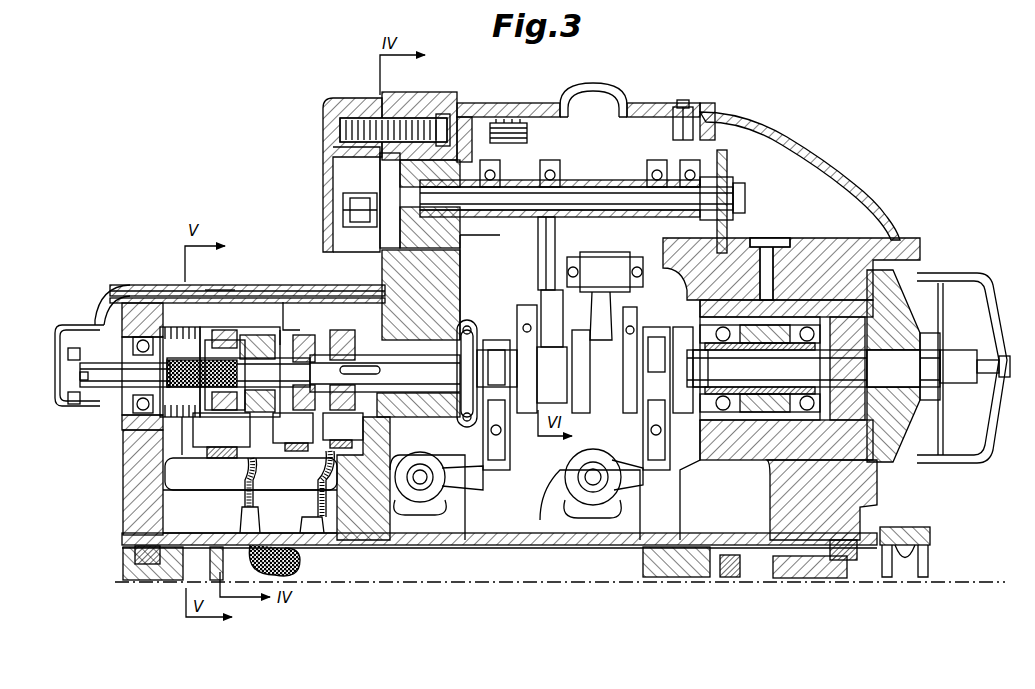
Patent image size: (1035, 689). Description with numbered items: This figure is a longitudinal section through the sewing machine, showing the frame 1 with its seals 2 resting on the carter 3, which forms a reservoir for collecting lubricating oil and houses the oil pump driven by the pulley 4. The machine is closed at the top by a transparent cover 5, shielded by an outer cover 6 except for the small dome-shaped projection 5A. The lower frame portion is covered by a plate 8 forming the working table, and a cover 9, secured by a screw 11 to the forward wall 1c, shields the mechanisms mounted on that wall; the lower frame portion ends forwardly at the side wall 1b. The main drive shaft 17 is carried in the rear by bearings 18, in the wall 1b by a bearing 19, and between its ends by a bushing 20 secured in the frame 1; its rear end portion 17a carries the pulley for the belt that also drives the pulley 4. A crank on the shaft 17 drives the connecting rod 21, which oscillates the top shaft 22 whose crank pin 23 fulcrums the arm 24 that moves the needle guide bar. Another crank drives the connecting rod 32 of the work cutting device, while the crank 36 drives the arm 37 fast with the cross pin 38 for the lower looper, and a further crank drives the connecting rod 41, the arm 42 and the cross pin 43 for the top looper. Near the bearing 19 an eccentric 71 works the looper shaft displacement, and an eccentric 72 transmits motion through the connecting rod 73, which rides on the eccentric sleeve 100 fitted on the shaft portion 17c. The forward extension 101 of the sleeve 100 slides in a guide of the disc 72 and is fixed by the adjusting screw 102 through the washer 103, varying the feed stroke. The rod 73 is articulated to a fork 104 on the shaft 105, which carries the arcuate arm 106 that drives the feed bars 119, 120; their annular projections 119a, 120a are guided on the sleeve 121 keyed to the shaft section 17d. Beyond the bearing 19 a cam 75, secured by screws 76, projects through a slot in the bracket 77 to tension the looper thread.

The frame 1 is at (866, 478).
The side wall 1b is at (126, 487).
The forward wall 1c is at (412, 98).
The seals 2 is at (136, 556).
The carter 3 is at (148, 581).
The pulley 4 is at (929, 537).
The cover 5 is at (718, 118).
The domeshaped projection 5A is at (625, 95).
The outer cover 6 is at (798, 150).
The plate 8 is at (258, 286).
The cover 9 is at (324, 106).
The screw 11 is at (458, 108).
The main drive shaft 17 is at (800, 372).
The rear end portion 17a is at (900, 360).
The portion of main driving shaft 17c is at (125, 375).
The section of main shaft 17d is at (365, 375).
The bearings 18 is at (733, 329).
The bearing 19 is at (146, 286).
The bushing 20 is at (462, 320).
The connecting rod 21 is at (545, 252).
The top shaft 22 is at (628, 210).
The crank pin 23 is at (343, 206).
The arm 24 is at (355, 185).
The connecting rod 32 is at (610, 300).
The crank 36 is at (505, 450).
The arm 37 is at (470, 490).
The cross pin 38 is at (440, 492).
The connecting rod 41 is at (655, 420).
The arm 42 is at (634, 480).
The cross pin 43 is at (600, 492).
The eccentric 71 is at (178, 420).
The eccentric 72 is at (285, 287).
The connecting rod 73 is at (236, 298).
The cam 75 is at (130, 420).
The screws 76 is at (95, 397).
The bracket 77 is at (70, 325).
The sleeve 100 is at (236, 392).
The forward extension 101 is at (240, 452).
The adjusting screw 102 is at (267, 338).
The washer 103 is at (278, 332).
The fork 104 is at (200, 460).
The shaft 105 is at (268, 455).
The arcuate arm 106 is at (280, 330).
The bar 119 is at (308, 335).
The annular projection 119a is at (294, 432).
The second bar 120 is at (343, 330).
The annular projection 120a is at (344, 430).
The sleeve 121 is at (306, 369).